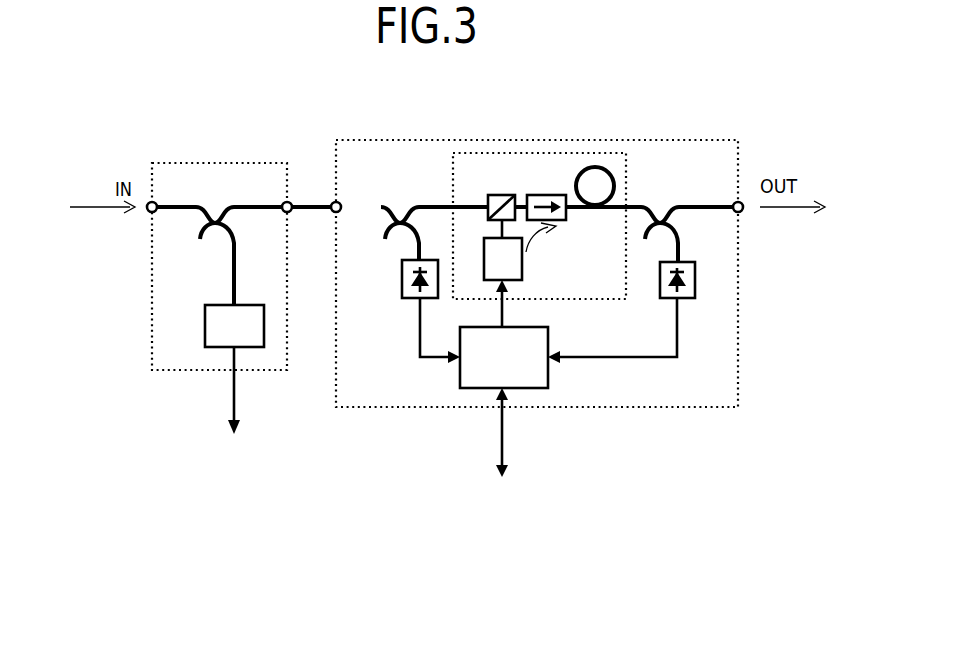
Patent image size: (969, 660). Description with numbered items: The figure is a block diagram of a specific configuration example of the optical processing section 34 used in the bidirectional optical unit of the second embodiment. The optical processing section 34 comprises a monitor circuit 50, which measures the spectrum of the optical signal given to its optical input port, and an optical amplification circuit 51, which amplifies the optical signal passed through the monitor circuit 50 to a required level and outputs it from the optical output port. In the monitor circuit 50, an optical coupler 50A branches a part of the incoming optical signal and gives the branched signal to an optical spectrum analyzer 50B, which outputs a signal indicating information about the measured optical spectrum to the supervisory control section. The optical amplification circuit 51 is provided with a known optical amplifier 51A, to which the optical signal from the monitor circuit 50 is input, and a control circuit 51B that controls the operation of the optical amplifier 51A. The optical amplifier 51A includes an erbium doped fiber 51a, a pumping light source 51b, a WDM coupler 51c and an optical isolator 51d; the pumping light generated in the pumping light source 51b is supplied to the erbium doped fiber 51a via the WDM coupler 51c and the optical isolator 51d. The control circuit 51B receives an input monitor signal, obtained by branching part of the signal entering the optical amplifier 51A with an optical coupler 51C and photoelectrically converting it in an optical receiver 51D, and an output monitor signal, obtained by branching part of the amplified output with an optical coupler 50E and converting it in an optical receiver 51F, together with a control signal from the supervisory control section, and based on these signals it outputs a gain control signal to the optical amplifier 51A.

The optical processing section 34 is at (733, 102).
The monitor circuit 50 is at (176, 163).
The optical coupler 50A is at (215, 222).
The optical spectrum analyzer 50B is at (220, 348).
The optical coupler 50E is at (660, 222).
The optical amplification circuit 51 is at (368, 140).
The optical amplifier 51A is at (502, 154).
The control circuit 51B is at (470, 389).
The optical coupler 51C is at (400, 222).
The optical receiver 51D is at (408, 299).
The optical receiver 51F is at (684, 299).
The erbium doped fiber 51a is at (600, 168).
The pumping light source 51b is at (523, 258).
The WDM coupler 51c is at (495, 192).
The optical isolator 51d is at (547, 194).